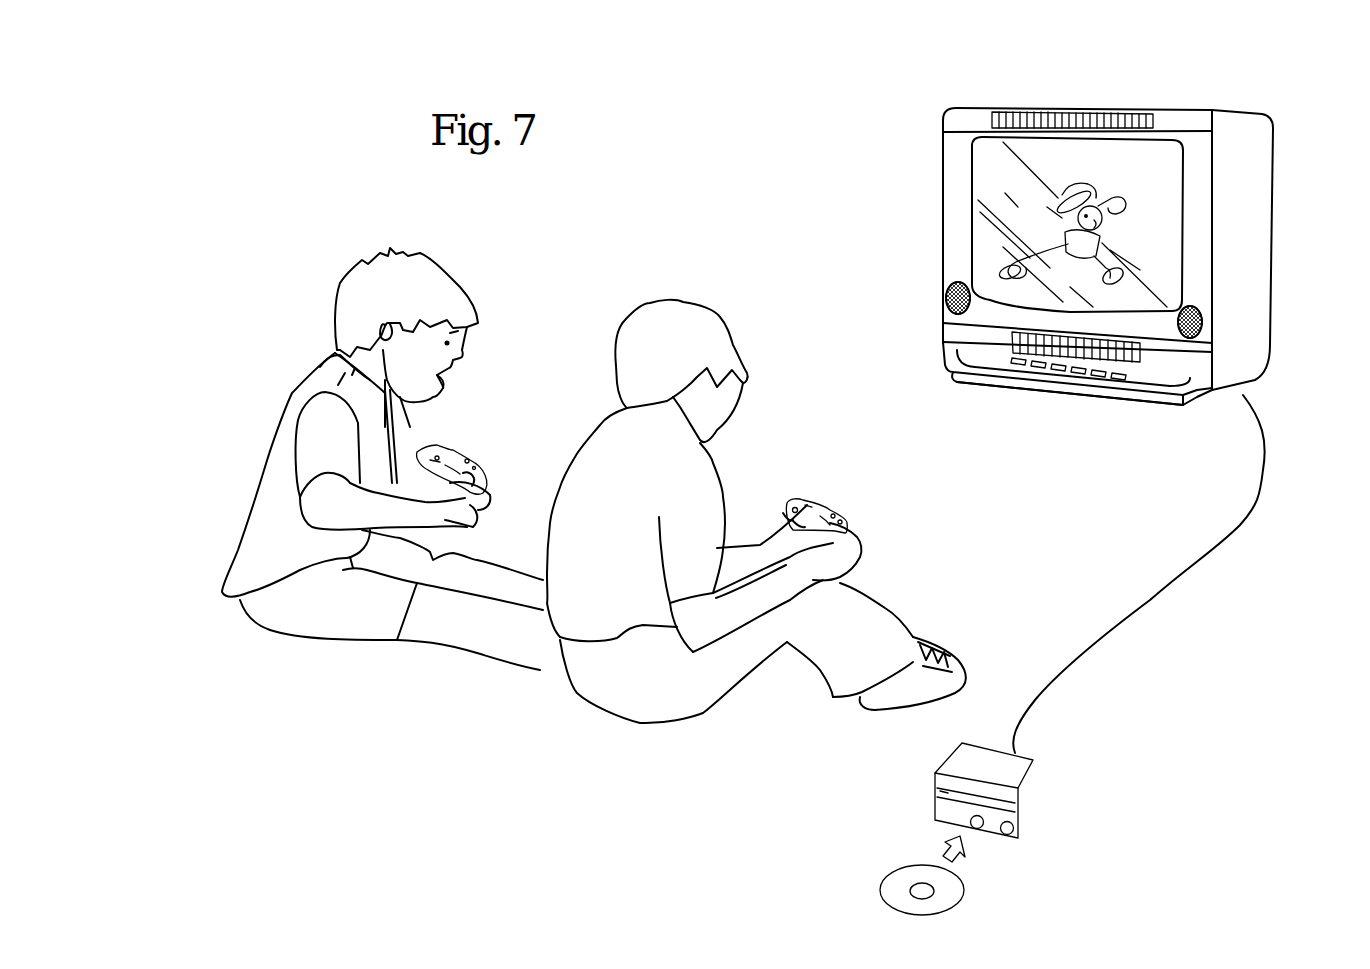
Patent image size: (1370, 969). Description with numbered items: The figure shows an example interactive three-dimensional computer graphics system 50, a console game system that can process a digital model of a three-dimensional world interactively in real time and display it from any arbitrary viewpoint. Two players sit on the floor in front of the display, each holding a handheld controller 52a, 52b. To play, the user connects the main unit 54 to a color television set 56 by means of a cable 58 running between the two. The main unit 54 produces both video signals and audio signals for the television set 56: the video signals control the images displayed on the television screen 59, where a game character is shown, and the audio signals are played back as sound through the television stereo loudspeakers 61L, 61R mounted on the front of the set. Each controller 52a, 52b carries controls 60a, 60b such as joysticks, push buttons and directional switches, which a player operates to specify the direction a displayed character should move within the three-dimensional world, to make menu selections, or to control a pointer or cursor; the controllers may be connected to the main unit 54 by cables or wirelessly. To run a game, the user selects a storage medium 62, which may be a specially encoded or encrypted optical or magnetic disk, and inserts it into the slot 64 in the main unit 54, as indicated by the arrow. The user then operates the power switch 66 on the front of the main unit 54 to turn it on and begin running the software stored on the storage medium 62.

The interactive 3D computer graphics system 50 is at (1204, 767).
The handheld controller 52a is at (480, 460).
The handheld controller 52b is at (841, 535).
The main unit 54 is at (1028, 792).
The color television set 56 is at (1180, 108).
The cable 58 is at (1113, 629).
The television screen 59 is at (1067, 160).
The controls 60a is at (467, 445).
The controls 60b is at (810, 503).
The television stereo loudspeaker 61L is at (946, 302).
The television stereo loudspeaker 61R is at (1200, 338).
The storage medium 62 is at (900, 898).
The slot 64 is at (935, 791).
The power switch 66 is at (1008, 833).